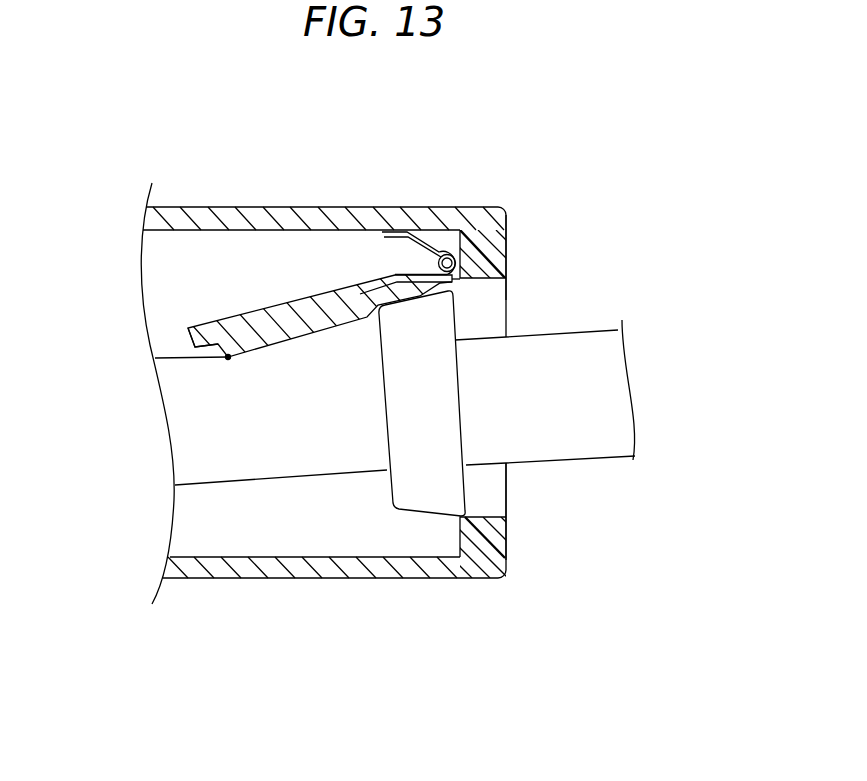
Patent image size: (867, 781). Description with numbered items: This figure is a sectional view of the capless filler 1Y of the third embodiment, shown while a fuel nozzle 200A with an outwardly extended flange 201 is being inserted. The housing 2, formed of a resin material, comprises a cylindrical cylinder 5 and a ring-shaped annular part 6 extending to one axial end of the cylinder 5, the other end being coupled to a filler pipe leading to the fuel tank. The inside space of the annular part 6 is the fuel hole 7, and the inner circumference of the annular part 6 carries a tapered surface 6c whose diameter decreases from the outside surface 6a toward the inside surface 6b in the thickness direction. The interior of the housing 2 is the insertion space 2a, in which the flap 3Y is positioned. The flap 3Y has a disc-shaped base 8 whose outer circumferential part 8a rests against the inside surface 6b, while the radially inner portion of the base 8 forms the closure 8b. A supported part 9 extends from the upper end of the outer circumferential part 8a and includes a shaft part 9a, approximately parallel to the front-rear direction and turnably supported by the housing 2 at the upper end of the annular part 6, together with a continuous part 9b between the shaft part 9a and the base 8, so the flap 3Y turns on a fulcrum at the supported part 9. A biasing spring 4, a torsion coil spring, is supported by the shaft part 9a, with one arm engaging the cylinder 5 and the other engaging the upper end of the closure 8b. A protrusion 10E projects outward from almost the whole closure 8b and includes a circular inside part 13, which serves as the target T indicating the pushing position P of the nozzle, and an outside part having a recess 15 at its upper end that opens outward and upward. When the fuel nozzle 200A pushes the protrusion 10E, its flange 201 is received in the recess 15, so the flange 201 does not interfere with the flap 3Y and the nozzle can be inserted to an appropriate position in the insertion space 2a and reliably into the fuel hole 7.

The capless filler 1Y is at (110, 158).
The housing 2 is at (193, 212).
The insertion space 2a is at (198, 278).
The flap 3Y is at (303, 296).
The biasing spring 4 is at (425, 258).
The cylinder 5 is at (242, 570).
The annular part 6 is at (506, 245).
The outside surface 6a is at (506, 268).
The inside surface 6b is at (460, 543).
The tapered surface 6c is at (505, 538).
The fuel hole 7 is at (504, 518).
The base 8 is at (262, 309).
The outer circumferential part 8a is at (190, 328).
The closure 8b is at (304, 297).
The supported part 9 is at (446, 254).
The shaft part 9a is at (439, 255).
The continuous part 9b is at (463, 277).
The protrusion 10E is at (265, 343).
The inside part 13 is at (288, 343).
The recess 15 is at (428, 316).
The fuel nozzle 200A is at (597, 457).
The flange 201 is at (445, 328).
The pushing position P is at (226, 355).
The target T is at (307, 335).